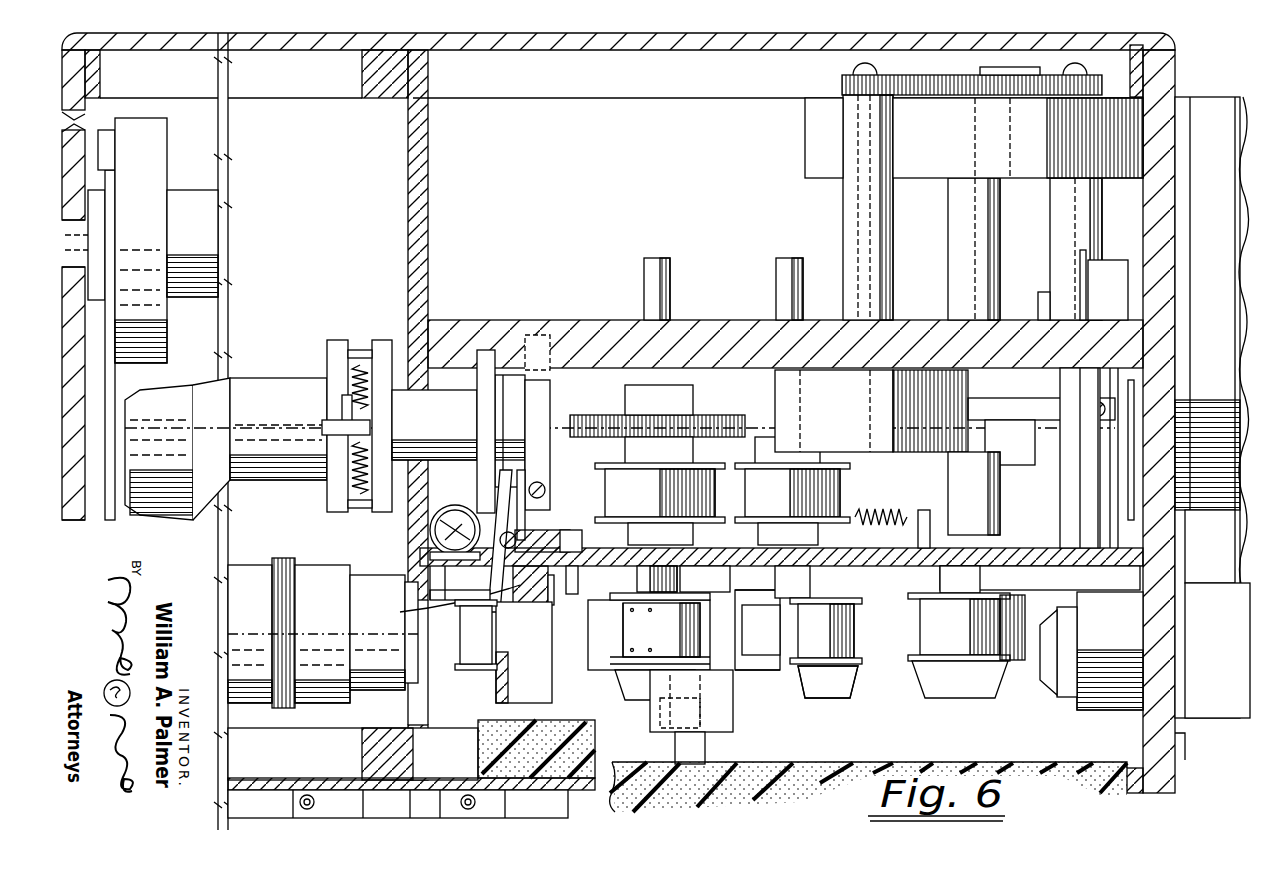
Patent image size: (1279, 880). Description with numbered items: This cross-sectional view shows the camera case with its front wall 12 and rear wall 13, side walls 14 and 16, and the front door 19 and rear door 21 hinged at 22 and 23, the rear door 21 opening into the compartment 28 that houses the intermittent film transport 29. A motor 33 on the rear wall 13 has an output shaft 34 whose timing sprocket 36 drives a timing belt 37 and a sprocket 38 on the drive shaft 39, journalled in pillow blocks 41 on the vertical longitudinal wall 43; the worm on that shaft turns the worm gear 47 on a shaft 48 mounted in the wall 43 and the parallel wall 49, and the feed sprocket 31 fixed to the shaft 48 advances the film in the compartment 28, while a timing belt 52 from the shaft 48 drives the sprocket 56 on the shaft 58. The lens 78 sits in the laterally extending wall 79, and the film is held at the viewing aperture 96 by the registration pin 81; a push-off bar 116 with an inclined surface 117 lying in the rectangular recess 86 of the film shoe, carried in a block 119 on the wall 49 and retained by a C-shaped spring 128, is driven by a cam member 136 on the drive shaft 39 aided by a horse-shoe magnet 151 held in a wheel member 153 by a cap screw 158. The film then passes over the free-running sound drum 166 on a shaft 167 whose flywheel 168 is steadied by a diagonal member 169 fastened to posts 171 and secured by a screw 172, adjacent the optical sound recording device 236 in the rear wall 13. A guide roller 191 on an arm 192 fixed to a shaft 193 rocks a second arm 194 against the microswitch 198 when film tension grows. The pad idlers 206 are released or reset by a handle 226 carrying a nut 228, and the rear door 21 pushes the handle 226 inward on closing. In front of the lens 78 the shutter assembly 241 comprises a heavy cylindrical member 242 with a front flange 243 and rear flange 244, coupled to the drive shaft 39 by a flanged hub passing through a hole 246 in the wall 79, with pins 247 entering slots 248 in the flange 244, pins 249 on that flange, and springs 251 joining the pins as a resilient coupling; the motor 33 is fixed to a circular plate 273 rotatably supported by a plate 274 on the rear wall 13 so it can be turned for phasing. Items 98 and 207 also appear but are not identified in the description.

The front wall 12 is at (88, 88).
The rear wall 13 is at (1152, 196).
The side wall 14 is at (352, 782).
The side wall 16 is at (718, 46).
The front door 19 is at (262, 788).
The rear door 21 is at (580, 790).
The hinge 22 is at (324, 803).
The hinge 23 is at (524, 812).
The compartment 28 is at (808, 716).
The intermittent film transport 29 is at (880, 705).
The feed sprocket 31 is at (660, 641).
The motor 33 is at (1245, 268).
The output shaft 34 is at (1042, 295).
The timing sprocket 36 is at (1080, 262).
The timing belt 37 is at (1110, 262).
The sprocket 38 is at (1135, 496).
The drive shaft 39 is at (878, 410).
The pillow blocks 41 is at (598, 456).
The vertical longitudinal wall 43 is at (545, 320).
The worm gear 47 is at (735, 414).
The shaft 48 is at (657, 258).
The vertical longitudinally extending wall 49 is at (872, 562).
The timing belt 52 is at (650, 499).
The sprocket 56 is at (852, 464).
The shaft 58 is at (790, 258).
The lens 78 is at (198, 518).
The vertical laterally extending wall 79 is at (428, 222).
The registration pin 81 is at (560, 600).
The rectangular recess 86 is at (548, 585).
The viewing aperture 96 is at (512, 640).
The roller 98 is at (458, 668).
The push-off bar 116 is at (512, 610).
The inclined surface 117 is at (405, 610).
The block 119 is at (578, 568).
The C-shaped spring 128 is at (430, 535).
The cam member 136 is at (480, 346).
The horse-shoe type magnet 151 is at (522, 512).
The wheel member 153 is at (548, 466).
The cap screw 158 is at (545, 492).
The sound drum 166 is at (1022, 665).
The shaft 167 is at (952, 218).
The flywheel 168 is at (1022, 160).
The diagonal member 169 is at (935, 85).
The posts 171 is at (872, 234).
The screw 172 is at (992, 68).
The guide roller 191 is at (960, 664).
The arm 192 is at (1040, 576).
The shaft 193 is at (1080, 500).
The arm 194 is at (1010, 470).
The Microswitch 198 is at (842, 406).
The pad idlers 206 is at (778, 690).
The block 207 is at (722, 668).
The handle 226 is at (705, 748).
The nut 228 is at (660, 710).
The optical type sound recording device 236 is at (1128, 651).
The shutter assembly 241 is at (158, 103).
The cylindrical member 242 is at (195, 298).
The circular radially extending flange 243 is at (152, 160).
The radially extending flange 244 is at (337, 342).
The hole 246 is at (382, 342).
The pins 247 is at (337, 408).
The slots 248 is at (324, 428).
The pins 249 is at (355, 510).
The springs 251 is at (355, 380).
The circular plate 273 is at (1230, 505).
The plate 274 is at (1198, 555).